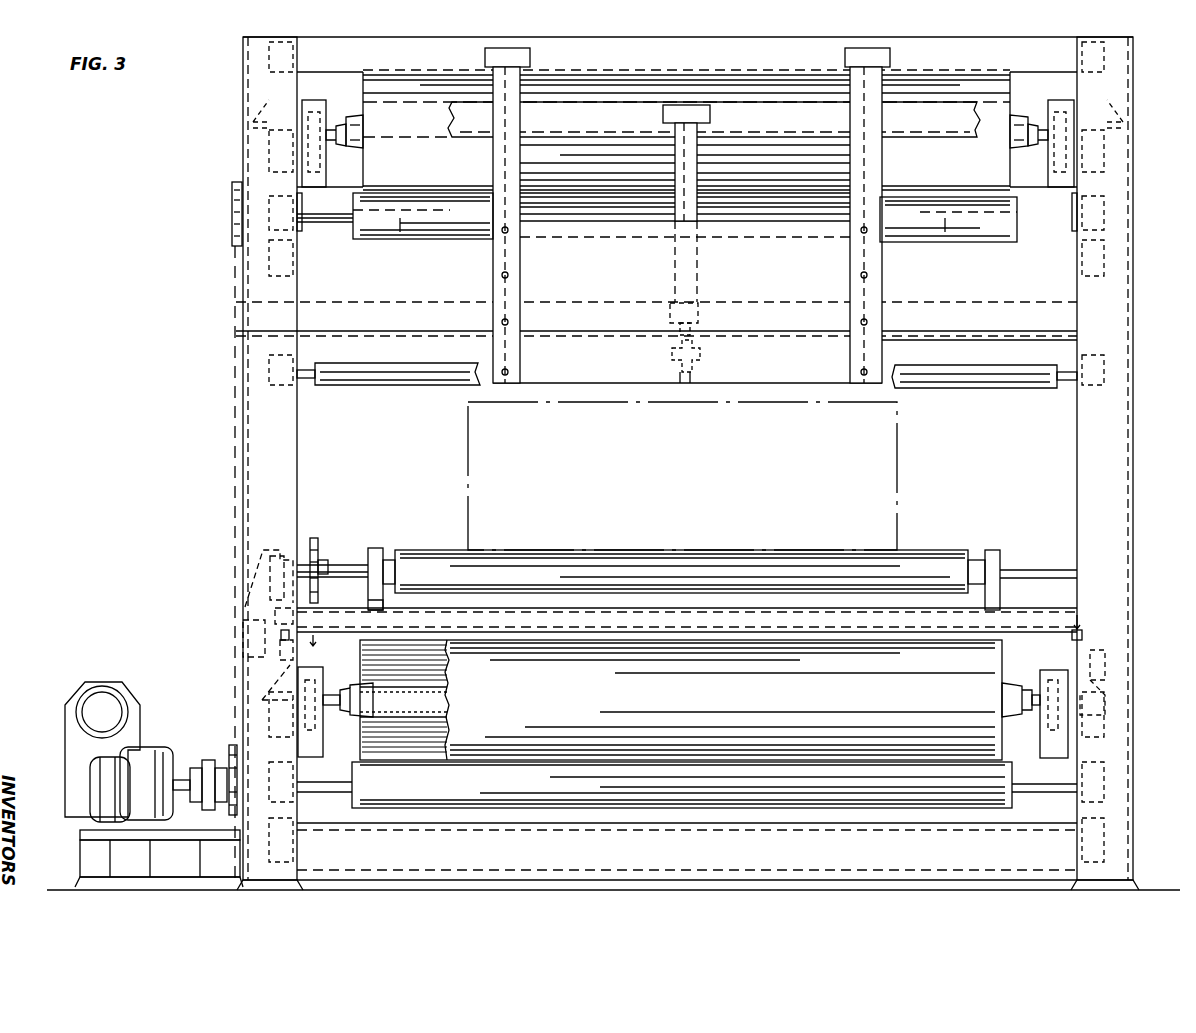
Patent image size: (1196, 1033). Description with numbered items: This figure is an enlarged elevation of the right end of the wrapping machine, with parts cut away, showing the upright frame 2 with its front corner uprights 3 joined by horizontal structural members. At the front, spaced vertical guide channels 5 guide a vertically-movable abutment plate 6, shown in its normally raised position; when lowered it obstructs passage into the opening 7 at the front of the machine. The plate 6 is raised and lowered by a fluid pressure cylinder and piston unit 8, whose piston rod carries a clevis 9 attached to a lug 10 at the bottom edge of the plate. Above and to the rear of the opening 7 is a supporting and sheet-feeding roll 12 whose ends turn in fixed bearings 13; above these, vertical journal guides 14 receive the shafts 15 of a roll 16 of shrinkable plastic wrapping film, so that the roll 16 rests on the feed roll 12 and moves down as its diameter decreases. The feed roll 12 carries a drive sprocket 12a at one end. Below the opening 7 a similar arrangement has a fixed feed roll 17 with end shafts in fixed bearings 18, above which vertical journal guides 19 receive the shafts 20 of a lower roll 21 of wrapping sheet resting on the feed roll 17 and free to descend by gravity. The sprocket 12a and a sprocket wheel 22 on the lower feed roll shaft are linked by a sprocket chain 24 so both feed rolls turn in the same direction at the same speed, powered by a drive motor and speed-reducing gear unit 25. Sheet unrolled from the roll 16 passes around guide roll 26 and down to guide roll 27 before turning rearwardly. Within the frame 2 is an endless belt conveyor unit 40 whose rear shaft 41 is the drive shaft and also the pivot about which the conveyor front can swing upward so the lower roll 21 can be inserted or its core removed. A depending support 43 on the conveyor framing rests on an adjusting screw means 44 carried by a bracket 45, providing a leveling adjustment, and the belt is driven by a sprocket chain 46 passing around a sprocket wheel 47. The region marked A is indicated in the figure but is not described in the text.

The upright frame 2 is at (262, 415).
The corner uprights 3 is at (245, 98).
The vertical guide channels 5 is at (493, 149).
The abutment plate 6 is at (744, 282).
The opening 7 is at (340, 467).
The fluid pressure cylinder and piston unit 8 is at (698, 212).
The clevis 9 is at (703, 352).
The lug 10 is at (670, 368).
The supporting and sheet-feeding roll 12 is at (450, 238).
The drive sprocket 12a is at (232, 196).
The fixed bearings 13 is at (300, 228).
The vertical journal guides 14 is at (326, 160).
The shafts 15 is at (340, 124).
The roll of wrapping film 16 is at (428, 122).
The fixed feed roll 17 is at (663, 800).
The fixed bearings 18 is at (298, 794).
The vertical journal guides 19 is at (320, 676).
The shafts 20 is at (450, 700).
The roll of wrapping sheet 21 is at (598, 710).
The sprocket wheel 22 is at (230, 750).
The sprocket chain 24 is at (243, 580).
The drive motor and speed-reducing gear unit 25 is at (90, 682).
The guide roll 26 is at (400, 234).
The guide roll 27 is at (418, 386).
The endless belt conveyor unit 40 is at (450, 548).
The rear shaft 41 is at (372, 556).
The depending support 43 is at (360, 610).
The adjusting screw means 44 is at (305, 632).
The bracket 45 is at (280, 658).
The sprocket chain 46 is at (316, 538).
The sprocket wheel 47 is at (328, 562).
The work area A is at (466, 462).